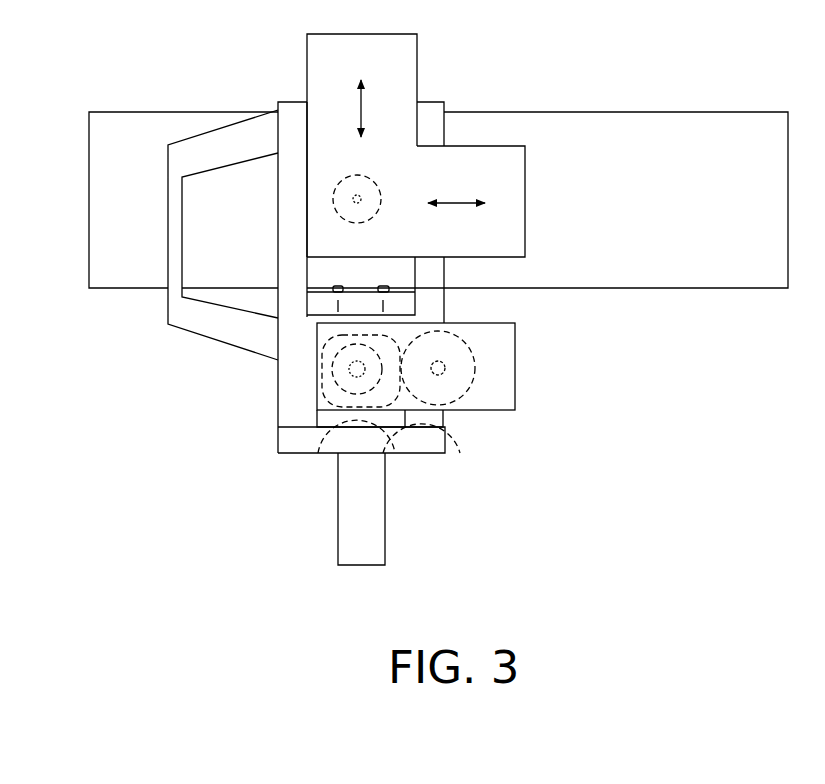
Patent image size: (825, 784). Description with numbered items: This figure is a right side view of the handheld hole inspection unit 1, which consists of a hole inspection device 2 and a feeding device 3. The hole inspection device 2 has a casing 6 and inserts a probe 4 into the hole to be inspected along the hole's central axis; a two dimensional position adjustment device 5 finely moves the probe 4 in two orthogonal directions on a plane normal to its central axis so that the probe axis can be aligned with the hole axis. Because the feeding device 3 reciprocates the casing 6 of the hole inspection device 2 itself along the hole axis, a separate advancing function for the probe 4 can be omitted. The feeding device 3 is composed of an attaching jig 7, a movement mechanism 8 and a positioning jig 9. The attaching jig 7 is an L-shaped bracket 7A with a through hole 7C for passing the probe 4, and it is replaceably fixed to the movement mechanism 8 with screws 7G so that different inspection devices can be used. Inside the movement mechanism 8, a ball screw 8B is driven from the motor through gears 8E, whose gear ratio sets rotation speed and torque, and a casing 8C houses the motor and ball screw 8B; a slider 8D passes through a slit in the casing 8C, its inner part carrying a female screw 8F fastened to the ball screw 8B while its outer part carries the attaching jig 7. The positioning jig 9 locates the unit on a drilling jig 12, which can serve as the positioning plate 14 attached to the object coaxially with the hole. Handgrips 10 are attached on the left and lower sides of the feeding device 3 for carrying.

The hole inspection unit 1 is at (166, 417).
The hole inspection device 2 is at (306, 62).
The feeding device 3 is at (518, 385).
The probe 4 is at (380, 195).
The two dimensional position adjustment device 5 is at (493, 148).
The casing 6 is at (317, 80).
The attaching jig 7 is at (757, 381).
The L-shaped bracket 7A is at (400, 303).
The through hole 7C is at (378, 214).
The screws 7G is at (444, 292).
The movement mechanism 8 is at (515, 410).
The ball screw 8B is at (323, 455).
The casing 8C is at (485, 410).
The slider 8D is at (316, 337).
The gears 8E is at (404, 455).
The female screw 8F is at (324, 376).
The positioning jig 9 is at (444, 110).
The handgrip 10 is at (168, 308).
The drilling jig 12 is at (563, 122).
The positioning plate 14 is at (183, 110).